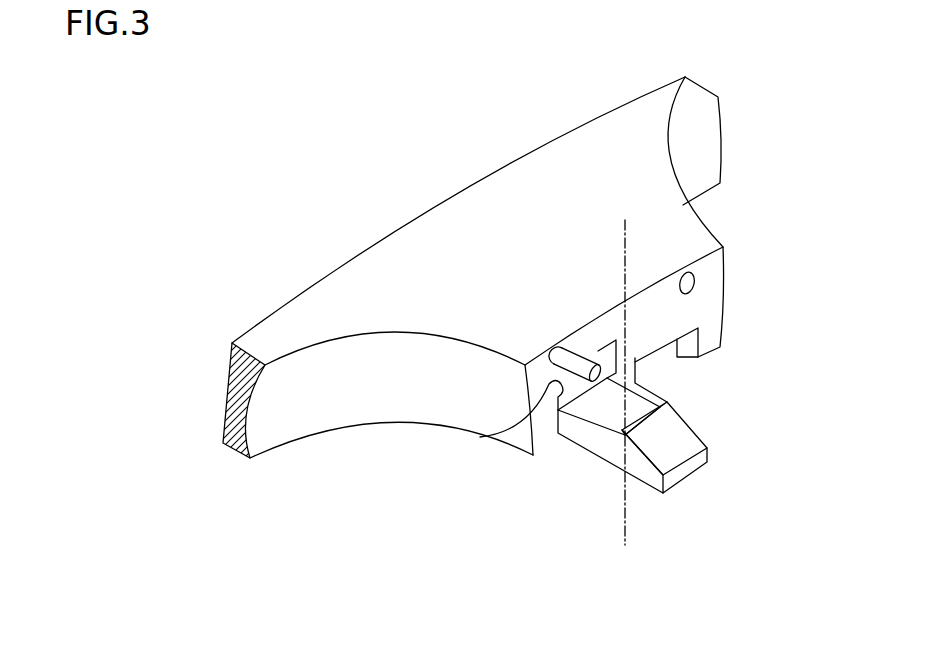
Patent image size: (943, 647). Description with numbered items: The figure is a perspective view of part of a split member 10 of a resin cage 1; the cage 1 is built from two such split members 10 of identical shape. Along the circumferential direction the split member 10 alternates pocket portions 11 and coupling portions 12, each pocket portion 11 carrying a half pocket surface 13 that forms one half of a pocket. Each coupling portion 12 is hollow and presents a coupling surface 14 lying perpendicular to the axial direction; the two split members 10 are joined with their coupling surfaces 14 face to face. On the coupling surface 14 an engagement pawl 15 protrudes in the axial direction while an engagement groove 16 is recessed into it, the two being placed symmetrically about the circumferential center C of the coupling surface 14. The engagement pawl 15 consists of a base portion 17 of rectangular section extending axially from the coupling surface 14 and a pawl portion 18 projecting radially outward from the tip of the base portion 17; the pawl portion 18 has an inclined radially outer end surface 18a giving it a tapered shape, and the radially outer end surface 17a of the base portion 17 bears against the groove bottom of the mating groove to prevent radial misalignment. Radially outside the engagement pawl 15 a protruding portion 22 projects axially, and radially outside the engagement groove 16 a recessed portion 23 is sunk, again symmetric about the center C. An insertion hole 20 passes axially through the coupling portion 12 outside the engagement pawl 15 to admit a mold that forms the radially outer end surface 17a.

The cage 1 is at (372, 177).
The split member 10 is at (418, 192).
The pocket portion 11 is at (263, 338).
The coupling portion 12 is at (500, 187).
The half pocket surface 13 is at (688, 188).
The coupling surface 14 is at (707, 307).
The engagement pawl 15 is at (692, 487).
The engagement groove 16 is at (653, 364).
The base portion 17 is at (578, 432).
The radially outer end surface 17a is at (613, 417).
The pawl portion 18 is at (647, 472).
The radially outer end surface 18a is at (680, 428).
The insertion hole 20 is at (549, 385).
The protruding portion 22 is at (573, 357).
The recessed portion 23 is at (695, 283).
The center of the coupling surface C is at (618, 243).